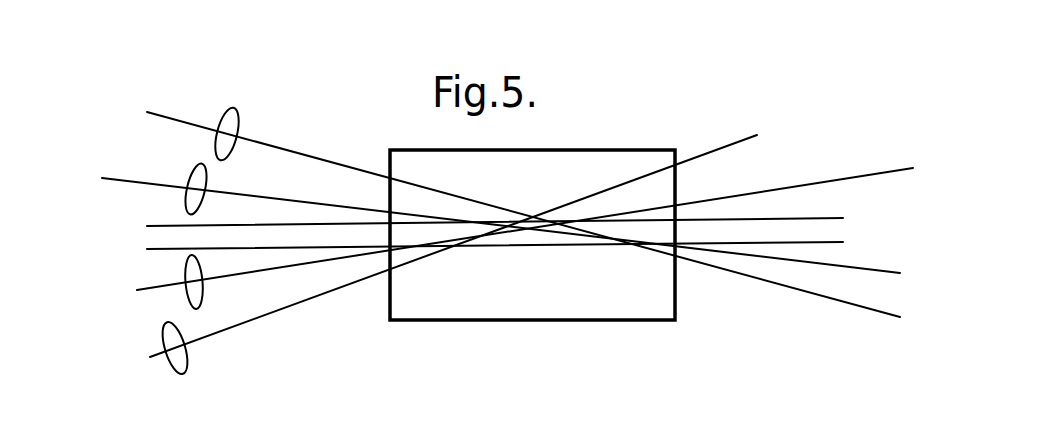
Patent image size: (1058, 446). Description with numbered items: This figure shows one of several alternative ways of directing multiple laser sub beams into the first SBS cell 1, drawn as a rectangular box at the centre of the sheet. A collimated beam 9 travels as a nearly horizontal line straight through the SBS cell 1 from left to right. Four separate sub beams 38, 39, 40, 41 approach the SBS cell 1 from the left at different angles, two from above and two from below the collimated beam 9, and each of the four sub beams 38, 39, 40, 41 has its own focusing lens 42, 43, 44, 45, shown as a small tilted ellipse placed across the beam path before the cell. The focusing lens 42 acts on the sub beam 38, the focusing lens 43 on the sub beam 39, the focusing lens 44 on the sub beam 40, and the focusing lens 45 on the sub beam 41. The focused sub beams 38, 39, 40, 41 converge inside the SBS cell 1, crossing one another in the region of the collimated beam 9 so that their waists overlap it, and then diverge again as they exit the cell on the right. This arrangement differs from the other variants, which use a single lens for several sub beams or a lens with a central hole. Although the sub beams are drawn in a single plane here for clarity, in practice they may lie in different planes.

The SBS cell 1 is at (609, 139).
The collimated beam 9 is at (152, 225).
The sub beam 38 is at (168, 114).
The sub beam 39 is at (121, 178).
The sub beam 40 is at (152, 289).
The sub beam 41 is at (158, 357).
The focusing lens 42 is at (240, 114).
The focusing lens 43 is at (192, 181).
The focusing lens 44 is at (188, 259).
The focusing lens 45 is at (187, 367).